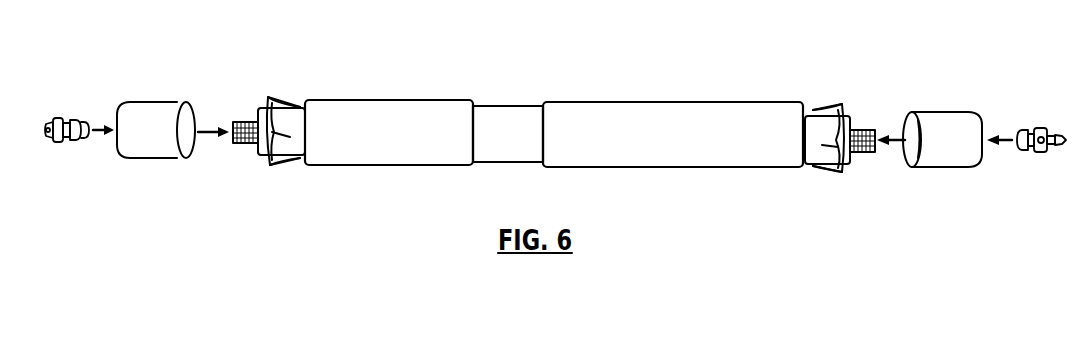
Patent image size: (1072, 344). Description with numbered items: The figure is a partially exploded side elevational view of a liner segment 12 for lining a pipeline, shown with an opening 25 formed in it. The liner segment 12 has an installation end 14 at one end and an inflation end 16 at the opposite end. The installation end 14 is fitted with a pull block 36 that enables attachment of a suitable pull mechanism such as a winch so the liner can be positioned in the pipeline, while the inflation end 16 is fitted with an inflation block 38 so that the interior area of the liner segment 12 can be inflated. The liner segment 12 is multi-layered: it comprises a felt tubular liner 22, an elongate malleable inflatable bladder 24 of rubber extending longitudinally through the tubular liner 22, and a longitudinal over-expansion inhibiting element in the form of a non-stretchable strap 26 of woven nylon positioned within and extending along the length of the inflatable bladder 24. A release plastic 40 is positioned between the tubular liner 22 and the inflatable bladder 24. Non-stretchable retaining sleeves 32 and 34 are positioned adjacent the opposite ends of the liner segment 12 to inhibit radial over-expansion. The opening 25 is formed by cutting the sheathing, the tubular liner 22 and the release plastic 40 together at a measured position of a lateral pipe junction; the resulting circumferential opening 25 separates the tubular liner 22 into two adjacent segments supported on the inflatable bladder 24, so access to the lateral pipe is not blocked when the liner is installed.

The liner segment 12 is at (653, 86).
The installation end 14 is at (280, 182).
The inflation end 16 is at (828, 185).
The tubular liner 22 is at (345, 149).
The malleable inflatable bladder 24 is at (845, 125).
The opening 25 is at (500, 86).
The non-stretchable strap 26 is at (862, 153).
The non-stretchable retaining sleeve 32 is at (157, 110).
The non-stretchable retaining sleeve 34 is at (946, 120).
The pull block 36 is at (60, 142).
The inflation block 38 is at (1046, 153).
The release plastic 40 is at (278, 100).